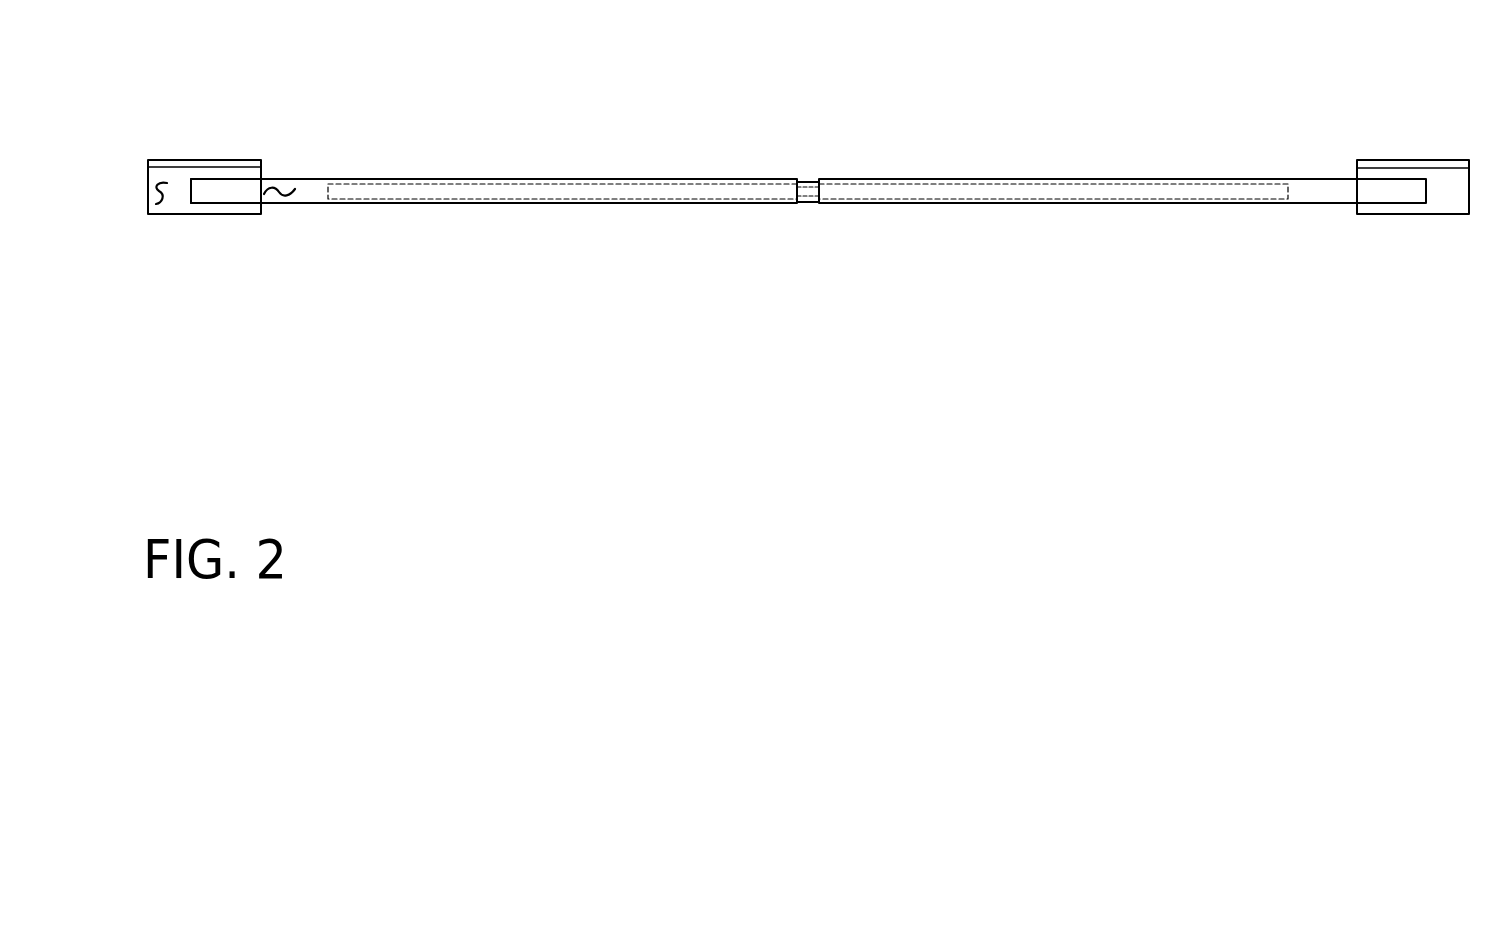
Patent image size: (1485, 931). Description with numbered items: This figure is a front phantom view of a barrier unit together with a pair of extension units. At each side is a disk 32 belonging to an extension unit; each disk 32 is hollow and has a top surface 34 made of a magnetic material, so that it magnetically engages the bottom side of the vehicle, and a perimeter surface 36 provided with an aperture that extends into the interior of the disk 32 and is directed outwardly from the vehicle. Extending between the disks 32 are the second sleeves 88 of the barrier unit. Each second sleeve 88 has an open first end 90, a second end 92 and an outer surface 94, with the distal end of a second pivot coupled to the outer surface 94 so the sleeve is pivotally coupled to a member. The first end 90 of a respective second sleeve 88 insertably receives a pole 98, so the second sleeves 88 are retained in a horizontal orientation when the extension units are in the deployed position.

The disk 32 is at (173, 215).
The top surface 34 is at (193, 162).
The perimeter surface 36 is at (151, 191).
The second sleeve 88 is at (535, 204).
The first end 90 is at (798, 181).
The second end 92 is at (193, 190).
The outer surface 94 is at (278, 196).
The pole 98 is at (416, 192).